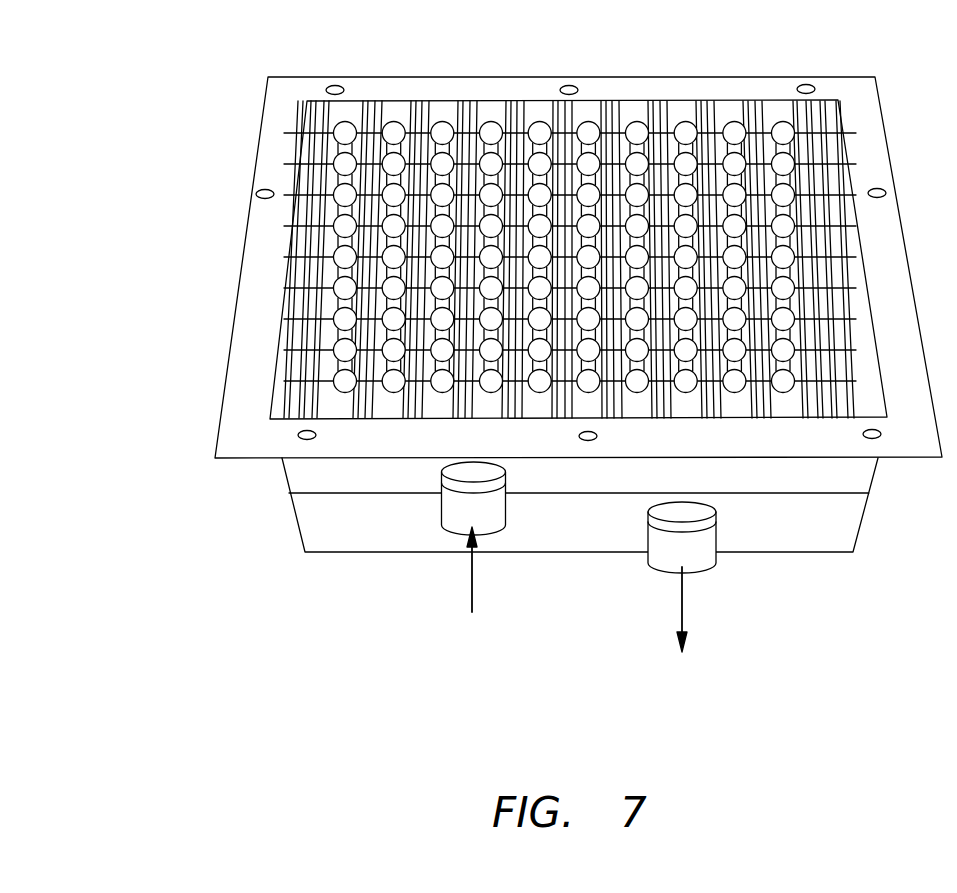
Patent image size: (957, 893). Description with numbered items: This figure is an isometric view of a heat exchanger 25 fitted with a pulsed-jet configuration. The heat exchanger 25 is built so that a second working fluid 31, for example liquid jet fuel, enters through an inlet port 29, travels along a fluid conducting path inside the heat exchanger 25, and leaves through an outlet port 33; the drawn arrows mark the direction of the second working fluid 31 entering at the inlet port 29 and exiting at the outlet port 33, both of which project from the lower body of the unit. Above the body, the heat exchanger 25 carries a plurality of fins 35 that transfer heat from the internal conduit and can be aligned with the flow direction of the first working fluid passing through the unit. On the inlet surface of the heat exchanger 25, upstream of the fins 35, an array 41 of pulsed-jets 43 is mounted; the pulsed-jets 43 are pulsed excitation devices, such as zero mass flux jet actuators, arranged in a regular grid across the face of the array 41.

The heat exchanger 25 is at (90, 368).
The inlet port 29 is at (455, 500).
The second working fluid 31 is at (470, 602).
The outlet port 33 is at (660, 538).
The fins 35 is at (298, 382).
The array of pulsed-jets 41 is at (283, 155).
The pulsed-jets 43 is at (780, 121).